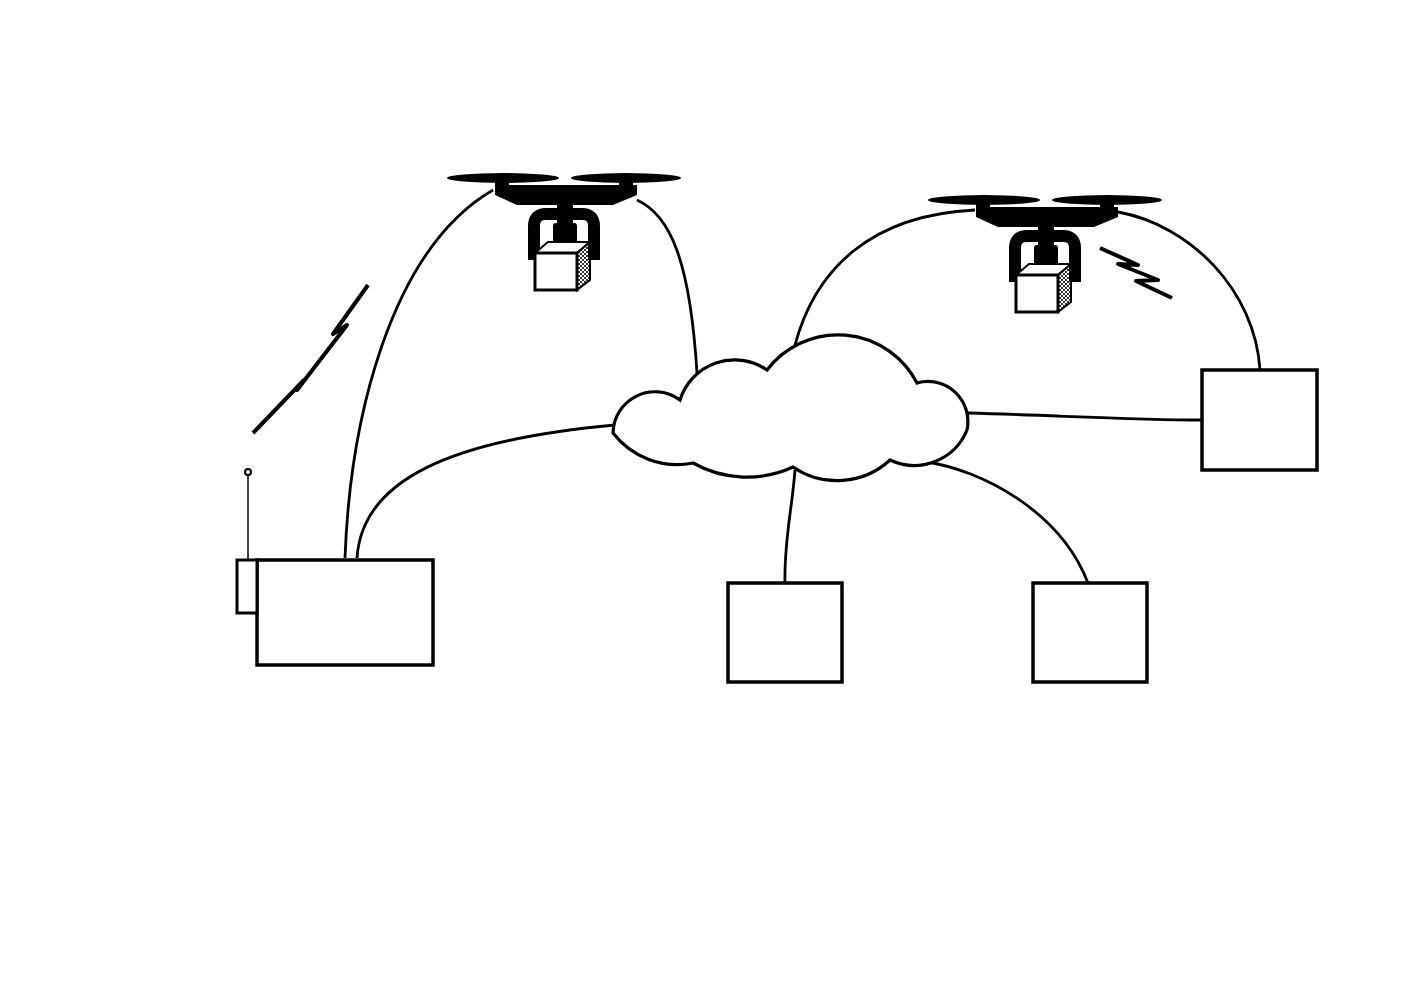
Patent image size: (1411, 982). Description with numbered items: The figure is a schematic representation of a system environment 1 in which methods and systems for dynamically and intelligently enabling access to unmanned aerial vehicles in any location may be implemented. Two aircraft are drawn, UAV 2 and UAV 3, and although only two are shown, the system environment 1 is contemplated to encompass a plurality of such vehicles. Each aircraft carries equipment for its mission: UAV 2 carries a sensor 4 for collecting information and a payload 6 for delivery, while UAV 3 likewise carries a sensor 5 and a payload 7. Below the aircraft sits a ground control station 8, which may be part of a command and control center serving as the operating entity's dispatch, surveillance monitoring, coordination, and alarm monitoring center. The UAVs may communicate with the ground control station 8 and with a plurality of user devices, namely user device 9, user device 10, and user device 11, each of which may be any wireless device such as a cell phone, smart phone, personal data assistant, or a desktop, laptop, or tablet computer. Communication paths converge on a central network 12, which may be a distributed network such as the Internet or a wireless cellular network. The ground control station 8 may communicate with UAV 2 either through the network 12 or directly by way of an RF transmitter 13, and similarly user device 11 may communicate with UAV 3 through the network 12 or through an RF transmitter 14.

The system environment 1 is at (499, 108).
The UAV 2 is at (610, 173).
The UAV 3 is at (1092, 196).
The sensor 4 is at (540, 243).
The sensor 5 is at (1010, 268).
The payload 6 is at (558, 292).
The payload 7 is at (1040, 313).
The ground control station 8 is at (433, 615).
The user device 9 is at (728, 632).
The user device 10 is at (1033, 632).
The user device 11 is at (1317, 420).
The network 12 is at (697, 467).
The RF transmitter 13 is at (237, 585).
The RF transmitter 14 is at (1157, 340).